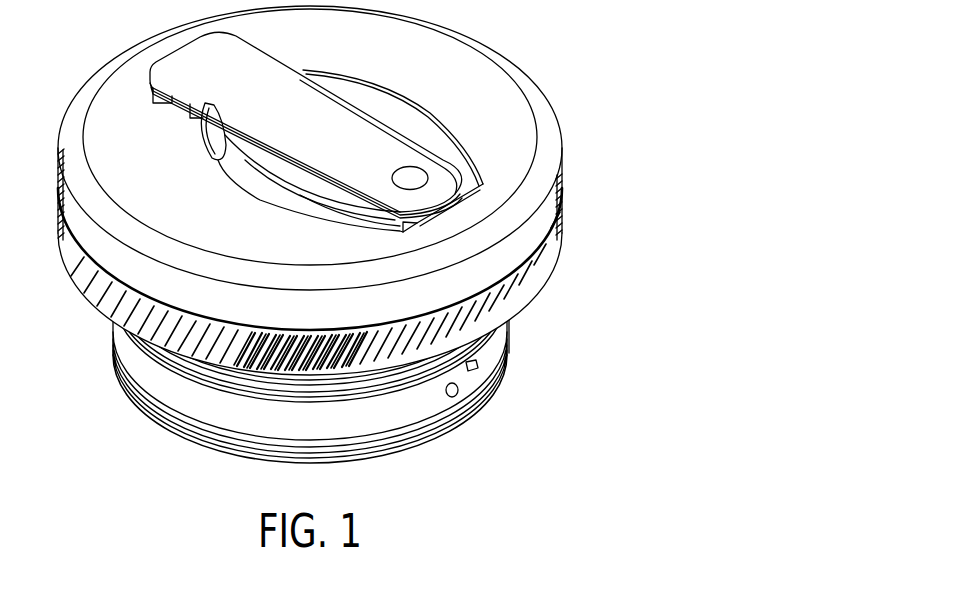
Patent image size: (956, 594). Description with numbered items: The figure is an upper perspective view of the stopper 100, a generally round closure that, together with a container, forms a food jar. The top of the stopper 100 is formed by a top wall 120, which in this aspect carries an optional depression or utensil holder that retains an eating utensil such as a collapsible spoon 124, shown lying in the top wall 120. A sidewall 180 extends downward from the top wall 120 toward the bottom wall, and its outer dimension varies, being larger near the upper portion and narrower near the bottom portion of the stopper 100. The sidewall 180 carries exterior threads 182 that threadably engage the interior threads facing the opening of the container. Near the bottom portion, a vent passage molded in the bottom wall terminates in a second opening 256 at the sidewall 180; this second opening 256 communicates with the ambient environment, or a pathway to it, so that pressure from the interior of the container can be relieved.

The stopper 100 is at (627, 137).
The top wall 120 is at (498, 77).
The collapsible spoon 124 is at (242, 62).
The exterior threads 182 is at (507, 332).
The sidewall 180 is at (412, 404).
The second opening 256 is at (457, 397).